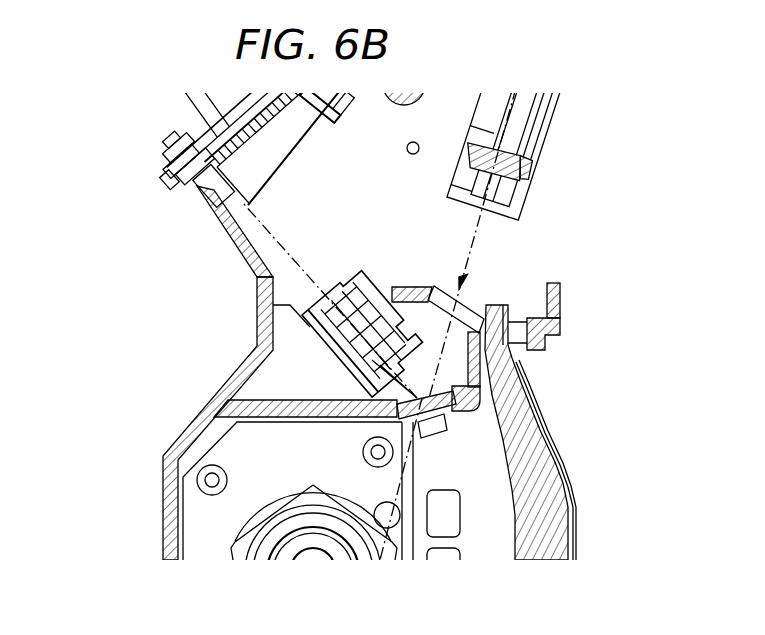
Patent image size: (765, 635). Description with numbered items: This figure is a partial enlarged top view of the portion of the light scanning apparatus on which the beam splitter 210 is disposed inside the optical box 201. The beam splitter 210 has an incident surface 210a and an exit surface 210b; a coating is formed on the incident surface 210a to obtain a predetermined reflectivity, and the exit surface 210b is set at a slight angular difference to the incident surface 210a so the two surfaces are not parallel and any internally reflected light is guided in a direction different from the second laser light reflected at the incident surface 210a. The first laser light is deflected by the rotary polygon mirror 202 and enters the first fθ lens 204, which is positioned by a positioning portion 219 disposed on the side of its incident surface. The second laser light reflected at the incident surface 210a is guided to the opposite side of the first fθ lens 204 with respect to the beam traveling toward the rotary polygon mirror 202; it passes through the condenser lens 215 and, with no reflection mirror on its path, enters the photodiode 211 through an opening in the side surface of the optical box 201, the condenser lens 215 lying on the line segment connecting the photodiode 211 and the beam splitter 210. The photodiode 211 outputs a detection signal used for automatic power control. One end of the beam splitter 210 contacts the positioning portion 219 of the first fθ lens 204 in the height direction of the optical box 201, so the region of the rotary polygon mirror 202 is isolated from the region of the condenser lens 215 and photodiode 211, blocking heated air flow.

The optical box 201 is at (217, 222).
The rotary polygon mirror 202 is at (232, 548).
The first fθ lens 204 is at (533, 414).
The beam splitter 210 is at (397, 417).
The incident surface 210a is at (417, 398).
The exit surface 210b is at (443, 413).
The photodiode 211 is at (214, 168).
The condenser lens 215 is at (371, 293).
The positioning portion 219 is at (475, 385).